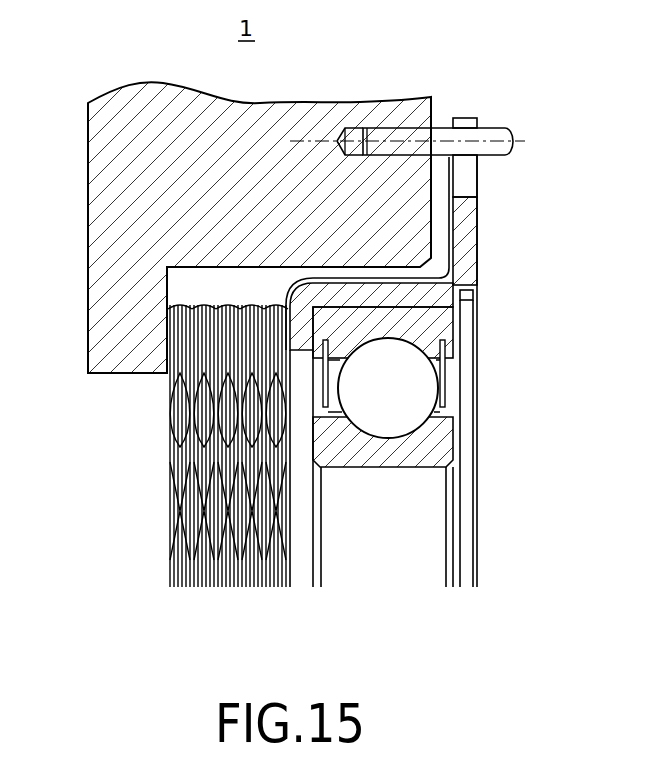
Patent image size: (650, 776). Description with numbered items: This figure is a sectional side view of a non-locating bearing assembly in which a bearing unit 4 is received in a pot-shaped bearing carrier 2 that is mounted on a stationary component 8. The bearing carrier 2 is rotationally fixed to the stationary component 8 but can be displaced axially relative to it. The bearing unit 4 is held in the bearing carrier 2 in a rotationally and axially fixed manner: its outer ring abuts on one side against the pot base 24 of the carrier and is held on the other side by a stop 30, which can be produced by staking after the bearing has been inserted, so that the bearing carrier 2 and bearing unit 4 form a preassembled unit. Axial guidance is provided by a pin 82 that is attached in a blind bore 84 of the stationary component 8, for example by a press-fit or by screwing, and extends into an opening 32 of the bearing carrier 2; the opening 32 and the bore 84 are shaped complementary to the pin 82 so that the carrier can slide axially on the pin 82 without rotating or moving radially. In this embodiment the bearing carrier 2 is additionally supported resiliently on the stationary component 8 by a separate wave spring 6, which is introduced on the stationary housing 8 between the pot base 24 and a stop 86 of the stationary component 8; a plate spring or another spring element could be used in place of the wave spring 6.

The bearing carrier 2 is at (466, 243).
The bearing unit 4 is at (480, 373).
The wave spring 6 is at (213, 348).
The stationary component 8 is at (108, 143).
The pot base 24 is at (296, 335).
The stop 30 is at (462, 305).
The opening 32 is at (465, 178).
The pin 82 is at (417, 135).
The blind bore 84 is at (350, 128).
The stop 86 is at (108, 340).